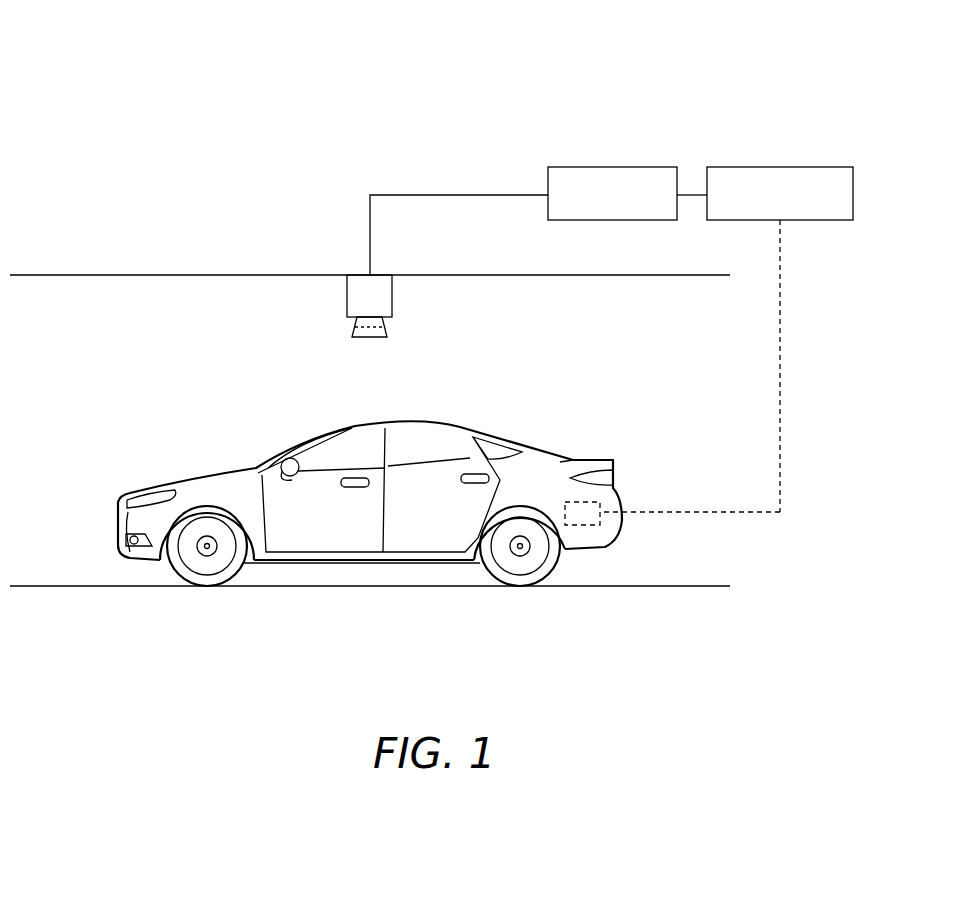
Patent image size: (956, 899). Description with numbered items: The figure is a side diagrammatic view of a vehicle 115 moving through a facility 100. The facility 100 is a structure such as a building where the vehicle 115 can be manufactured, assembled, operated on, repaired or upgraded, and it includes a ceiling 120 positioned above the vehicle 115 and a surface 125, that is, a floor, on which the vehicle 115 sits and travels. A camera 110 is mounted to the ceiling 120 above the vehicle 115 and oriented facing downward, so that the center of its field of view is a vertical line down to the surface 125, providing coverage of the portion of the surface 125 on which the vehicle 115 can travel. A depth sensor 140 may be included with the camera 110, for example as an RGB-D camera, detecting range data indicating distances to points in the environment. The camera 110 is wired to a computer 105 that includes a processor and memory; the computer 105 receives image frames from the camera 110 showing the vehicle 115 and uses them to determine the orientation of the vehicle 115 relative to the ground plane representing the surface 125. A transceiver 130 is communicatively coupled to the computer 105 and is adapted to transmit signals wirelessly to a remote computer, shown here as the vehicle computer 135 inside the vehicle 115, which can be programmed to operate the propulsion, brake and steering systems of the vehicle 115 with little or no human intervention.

The facility 100 is at (85, 86).
The computer 105 is at (655, 166).
The camera 110 is at (370, 306).
The vehicle 115 is at (543, 450).
The ceiling 120 is at (95, 276).
The surface 125 is at (52, 585).
The transceiver 130 is at (830, 166).
The vehicle computer 135 is at (588, 526).
The depth sensor 140 is at (347, 297).